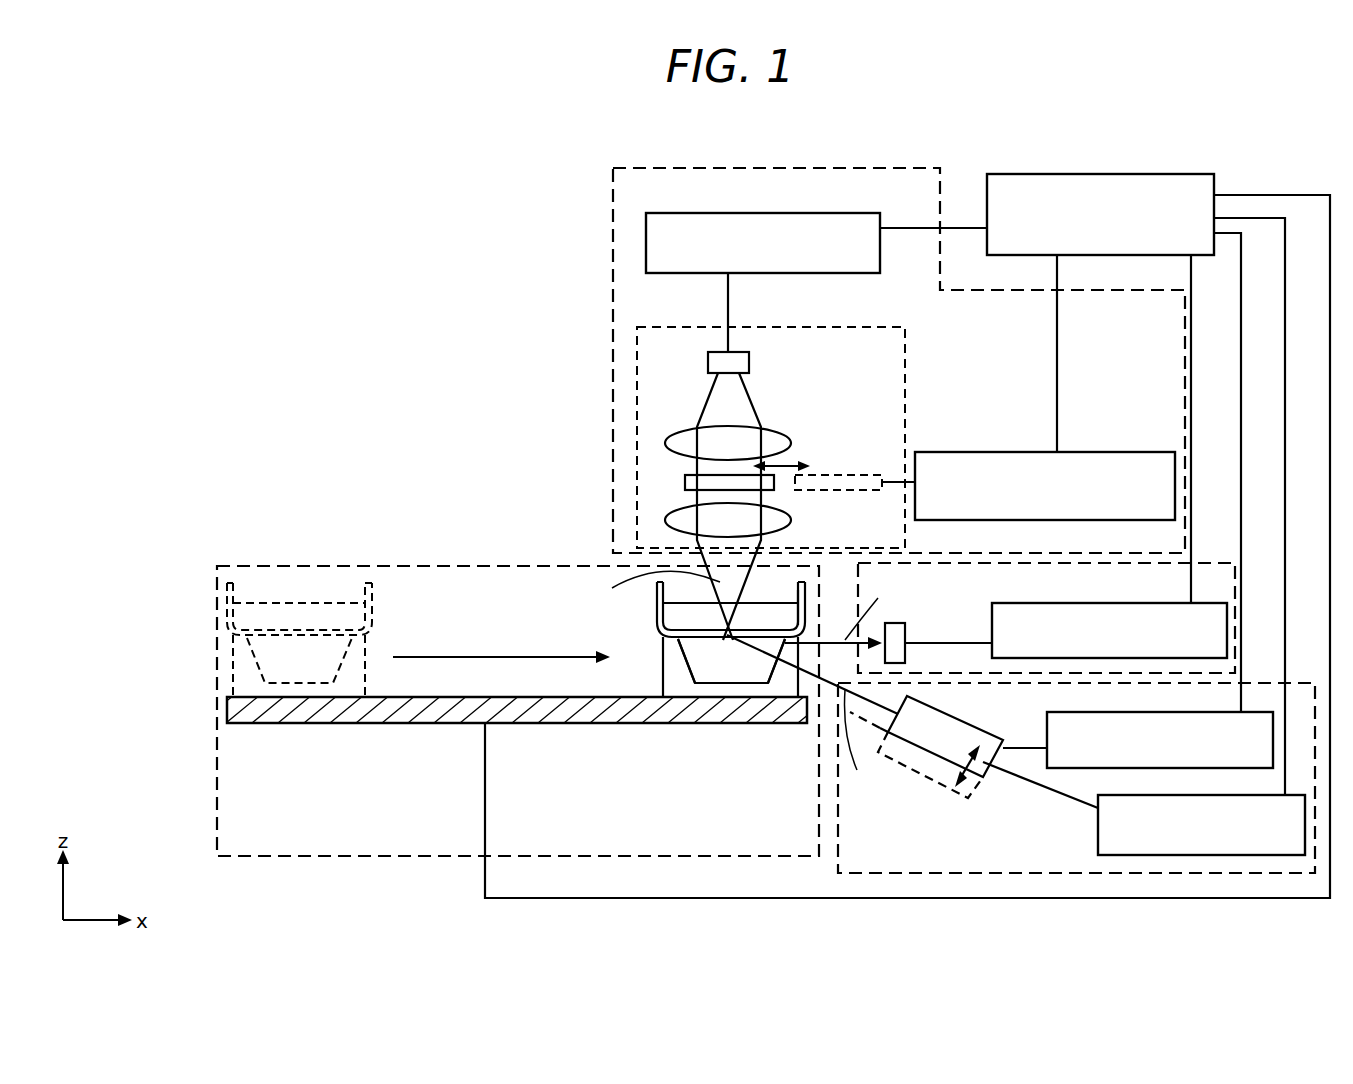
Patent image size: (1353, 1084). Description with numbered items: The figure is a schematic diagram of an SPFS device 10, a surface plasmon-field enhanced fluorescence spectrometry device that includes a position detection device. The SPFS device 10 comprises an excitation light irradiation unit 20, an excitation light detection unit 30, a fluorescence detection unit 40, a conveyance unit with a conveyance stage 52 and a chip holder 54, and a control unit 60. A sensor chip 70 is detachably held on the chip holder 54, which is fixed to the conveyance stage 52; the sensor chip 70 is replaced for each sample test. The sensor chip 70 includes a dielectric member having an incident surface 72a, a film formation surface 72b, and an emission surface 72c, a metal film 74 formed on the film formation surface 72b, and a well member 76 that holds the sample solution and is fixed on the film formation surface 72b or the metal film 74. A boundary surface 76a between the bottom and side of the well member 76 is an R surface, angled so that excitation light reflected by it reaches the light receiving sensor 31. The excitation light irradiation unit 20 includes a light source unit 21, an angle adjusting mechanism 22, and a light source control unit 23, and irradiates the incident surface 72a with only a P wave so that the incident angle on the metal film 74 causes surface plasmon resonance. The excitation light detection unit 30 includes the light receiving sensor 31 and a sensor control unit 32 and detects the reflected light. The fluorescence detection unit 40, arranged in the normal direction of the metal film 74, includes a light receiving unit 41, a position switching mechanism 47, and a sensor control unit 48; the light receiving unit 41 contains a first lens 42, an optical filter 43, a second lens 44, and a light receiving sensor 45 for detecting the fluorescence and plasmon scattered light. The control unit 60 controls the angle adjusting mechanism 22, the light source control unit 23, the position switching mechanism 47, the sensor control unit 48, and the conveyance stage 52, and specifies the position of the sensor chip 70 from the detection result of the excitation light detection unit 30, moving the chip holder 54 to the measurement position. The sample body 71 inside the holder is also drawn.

The SPFS device 10 is at (1314, 118).
The excitation light irradiation unit 20 is at (1063, 873).
The light source unit 21 is at (937, 750).
The angle adjusting mechanism 22 is at (1047, 725).
The light source control unit 23 is at (1195, 855).
The excitation light detection unit 30 is at (1215, 563).
The light receiving sensor 31 is at (906, 637).
The sensor control unit 32 is at (1045, 603).
The fluorescence detection unit 40 is at (885, 168).
The light receiving unit 41 is at (637, 337).
The first lens 42 is at (665, 520).
The optical filter 43 is at (685, 482).
The second lens 44 is at (665, 443).
The light receiving sensor 45 is at (708, 360).
The position switching mechanism 47 is at (1130, 452).
The sensor control unit 48 is at (727, 213).
The conveyance stage 52 is at (372, 723).
The chip holder 54 is at (670, 658).
The control unit 60 is at (1165, 174).
The sensor chip 70 is at (605, 768).
The sample 71 is at (720, 663).
The incident surface 72a is at (770, 676).
The film formation surface 72b is at (750, 638).
The emission surface 72c is at (703, 645).
The metal film 74 is at (683, 643).
The well member 76 is at (660, 612).
The boundary surface 76a is at (807, 632).